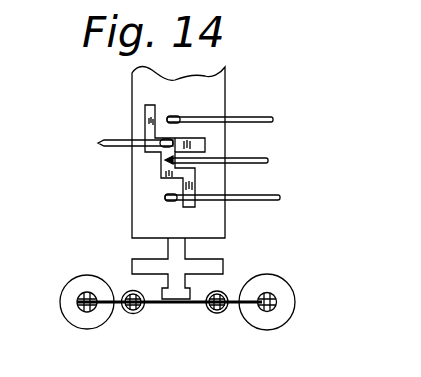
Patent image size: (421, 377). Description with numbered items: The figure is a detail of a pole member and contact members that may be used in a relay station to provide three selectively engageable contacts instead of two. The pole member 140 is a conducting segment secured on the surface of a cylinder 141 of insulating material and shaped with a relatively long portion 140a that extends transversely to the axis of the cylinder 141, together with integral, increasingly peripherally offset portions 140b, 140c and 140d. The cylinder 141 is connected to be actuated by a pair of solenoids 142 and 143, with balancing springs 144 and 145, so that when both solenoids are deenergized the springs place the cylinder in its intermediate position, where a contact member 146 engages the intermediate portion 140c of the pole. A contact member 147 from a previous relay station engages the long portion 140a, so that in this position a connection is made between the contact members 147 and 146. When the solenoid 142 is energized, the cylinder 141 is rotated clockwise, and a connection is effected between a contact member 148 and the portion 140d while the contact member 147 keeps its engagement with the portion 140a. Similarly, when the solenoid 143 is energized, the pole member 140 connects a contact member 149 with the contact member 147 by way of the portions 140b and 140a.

The pole member 140 is at (185, 155).
The long portion 140a is at (206, 144).
The peripherally offset portion 140b is at (246, 181).
The intermediate portion 140c is at (160, 167).
The peripherally offset portion 140d is at (146, 113).
The cylinder 141 is at (228, 78).
The solenoid 142 is at (275, 327).
The solenoid 143 is at (90, 329).
The balancing spring 144 is at (134, 313).
The balancing spring 145 is at (217, 313).
The contact member 146 is at (270, 157).
The contact member 147 is at (110, 141).
The contact member 148 is at (262, 115).
The contact member 149 is at (264, 200).